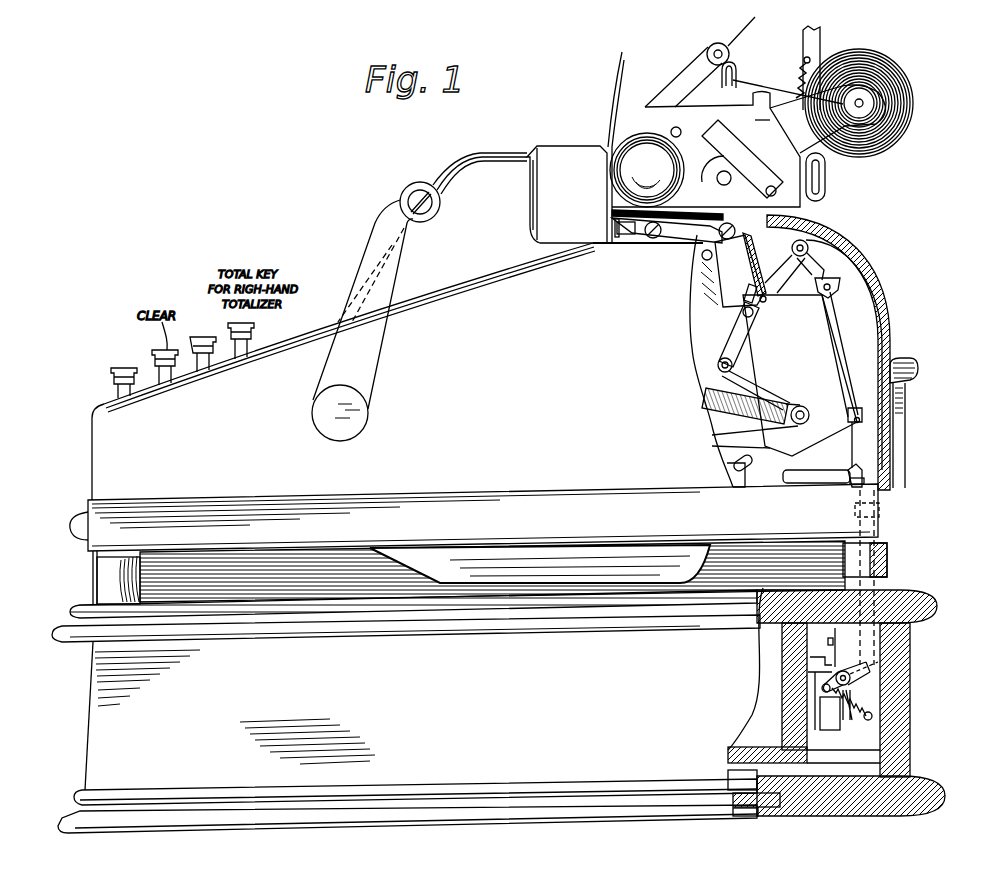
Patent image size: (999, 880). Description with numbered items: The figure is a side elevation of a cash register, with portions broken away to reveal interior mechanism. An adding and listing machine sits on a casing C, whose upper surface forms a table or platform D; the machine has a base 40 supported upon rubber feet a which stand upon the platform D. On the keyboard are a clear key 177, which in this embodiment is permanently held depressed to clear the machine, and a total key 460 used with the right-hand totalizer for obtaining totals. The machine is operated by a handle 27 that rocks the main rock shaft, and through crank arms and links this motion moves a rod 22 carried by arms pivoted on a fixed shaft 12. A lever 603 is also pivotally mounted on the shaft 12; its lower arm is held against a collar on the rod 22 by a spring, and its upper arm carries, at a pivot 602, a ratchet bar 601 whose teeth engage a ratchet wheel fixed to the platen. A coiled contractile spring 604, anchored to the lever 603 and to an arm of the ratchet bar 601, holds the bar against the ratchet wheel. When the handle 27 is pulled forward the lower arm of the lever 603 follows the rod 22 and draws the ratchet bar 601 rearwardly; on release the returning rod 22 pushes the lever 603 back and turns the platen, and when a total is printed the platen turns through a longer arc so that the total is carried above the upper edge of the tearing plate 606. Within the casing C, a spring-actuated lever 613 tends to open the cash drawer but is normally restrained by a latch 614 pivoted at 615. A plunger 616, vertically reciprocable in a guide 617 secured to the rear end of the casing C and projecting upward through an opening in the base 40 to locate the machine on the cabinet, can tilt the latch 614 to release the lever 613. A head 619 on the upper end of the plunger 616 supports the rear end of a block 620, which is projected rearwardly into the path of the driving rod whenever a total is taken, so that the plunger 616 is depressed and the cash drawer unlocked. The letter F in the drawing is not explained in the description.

The tearing plate 606 is at (608, 142).
The handle 27 is at (387, 222).
The clear key 177 is at (152, 362).
The total key 460 is at (250, 323).
The ratchet bar 601 is at (690, 224).
The pivot 602 is at (706, 244).
The lever 603 is at (733, 283).
The fixed shaft 12 is at (745, 309).
The coiled contractile spring 604 is at (757, 243).
The rod 22 is at (805, 416).
The block 620 is at (735, 458).
The head 619 is at (867, 482).
The guide 617 is at (897, 590).
The plunger 616 is at (873, 642).
The pivot 615 is at (850, 678).
The latch 614 is at (840, 673).
The spring-actuated lever 613 is at (833, 710).
The base 40 is at (474, 517).
The rubber feet a is at (105, 578).
The platform D is at (358, 600).
The casing C is at (910, 668).
The frame F is at (790, 710).